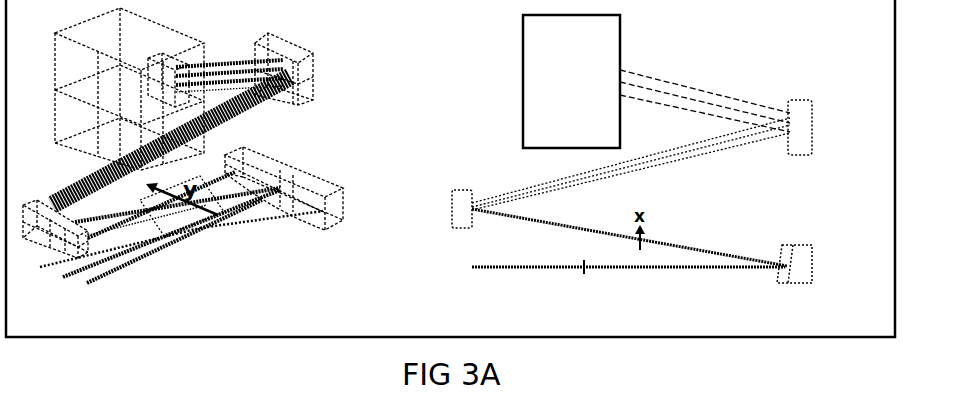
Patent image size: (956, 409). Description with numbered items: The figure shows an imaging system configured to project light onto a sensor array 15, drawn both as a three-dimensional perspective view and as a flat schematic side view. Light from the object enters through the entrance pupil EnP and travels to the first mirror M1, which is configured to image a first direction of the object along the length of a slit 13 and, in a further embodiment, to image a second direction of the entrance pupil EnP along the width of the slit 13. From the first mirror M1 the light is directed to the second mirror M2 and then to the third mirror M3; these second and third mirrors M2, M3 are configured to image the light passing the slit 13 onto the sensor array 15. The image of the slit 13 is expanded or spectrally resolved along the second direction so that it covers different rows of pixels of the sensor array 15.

The slit 13 is at (229, 242).
The sensor array 15 is at (173, 51).
The first mirror M1 is at (531, 215).
The second mirror M2 is at (245, 214).
The third mirror M3 is at (533, 90).
The entrance pupil EnP is at (412, 254).